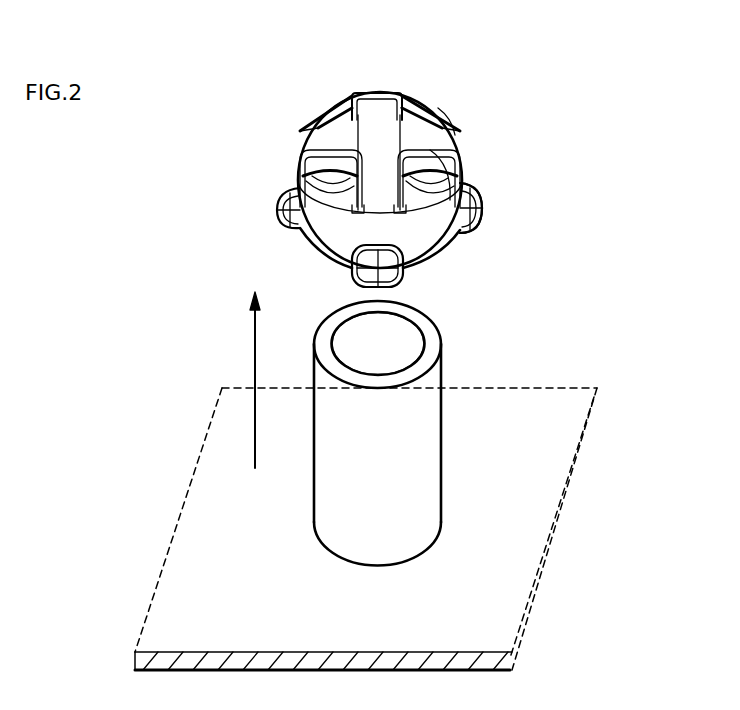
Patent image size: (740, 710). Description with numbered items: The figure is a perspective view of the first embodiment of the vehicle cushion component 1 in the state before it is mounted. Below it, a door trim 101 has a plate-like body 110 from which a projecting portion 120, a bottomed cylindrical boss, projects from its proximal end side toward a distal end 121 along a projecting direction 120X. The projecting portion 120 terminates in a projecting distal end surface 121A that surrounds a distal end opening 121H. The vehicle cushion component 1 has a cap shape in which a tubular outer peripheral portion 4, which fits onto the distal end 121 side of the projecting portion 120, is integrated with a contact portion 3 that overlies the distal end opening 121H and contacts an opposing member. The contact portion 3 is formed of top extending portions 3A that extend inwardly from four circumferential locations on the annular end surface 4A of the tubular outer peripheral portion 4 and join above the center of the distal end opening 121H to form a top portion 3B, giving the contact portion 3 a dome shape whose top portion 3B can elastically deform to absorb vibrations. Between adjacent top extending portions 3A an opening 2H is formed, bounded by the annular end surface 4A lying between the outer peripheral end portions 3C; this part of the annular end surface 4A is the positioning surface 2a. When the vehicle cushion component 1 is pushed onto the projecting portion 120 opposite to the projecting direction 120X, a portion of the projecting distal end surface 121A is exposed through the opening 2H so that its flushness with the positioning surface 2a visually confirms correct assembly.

The vehicle cushion component 1 is at (422, 92).
The opening 2H is at (338, 176).
The positioning surface 2a is at (471, 208).
The contact portion 3 is at (377, 105).
The top extending portions 3A is at (426, 132).
The top portion 3B is at (363, 130).
The outer peripheral end portions 3C is at (448, 147).
The tubular outer peripheral portion 4 is at (432, 223).
The annular end surface 4A is at (432, 178).
The door trim 101 is at (575, 382).
The body 110 is at (213, 533).
The projecting portion 120 is at (420, 484).
The projecting direction 120X is at (254, 343).
The distal end 121 is at (442, 378).
The projecting distal end surface 121A is at (427, 328).
The distal end opening 121H is at (337, 333).